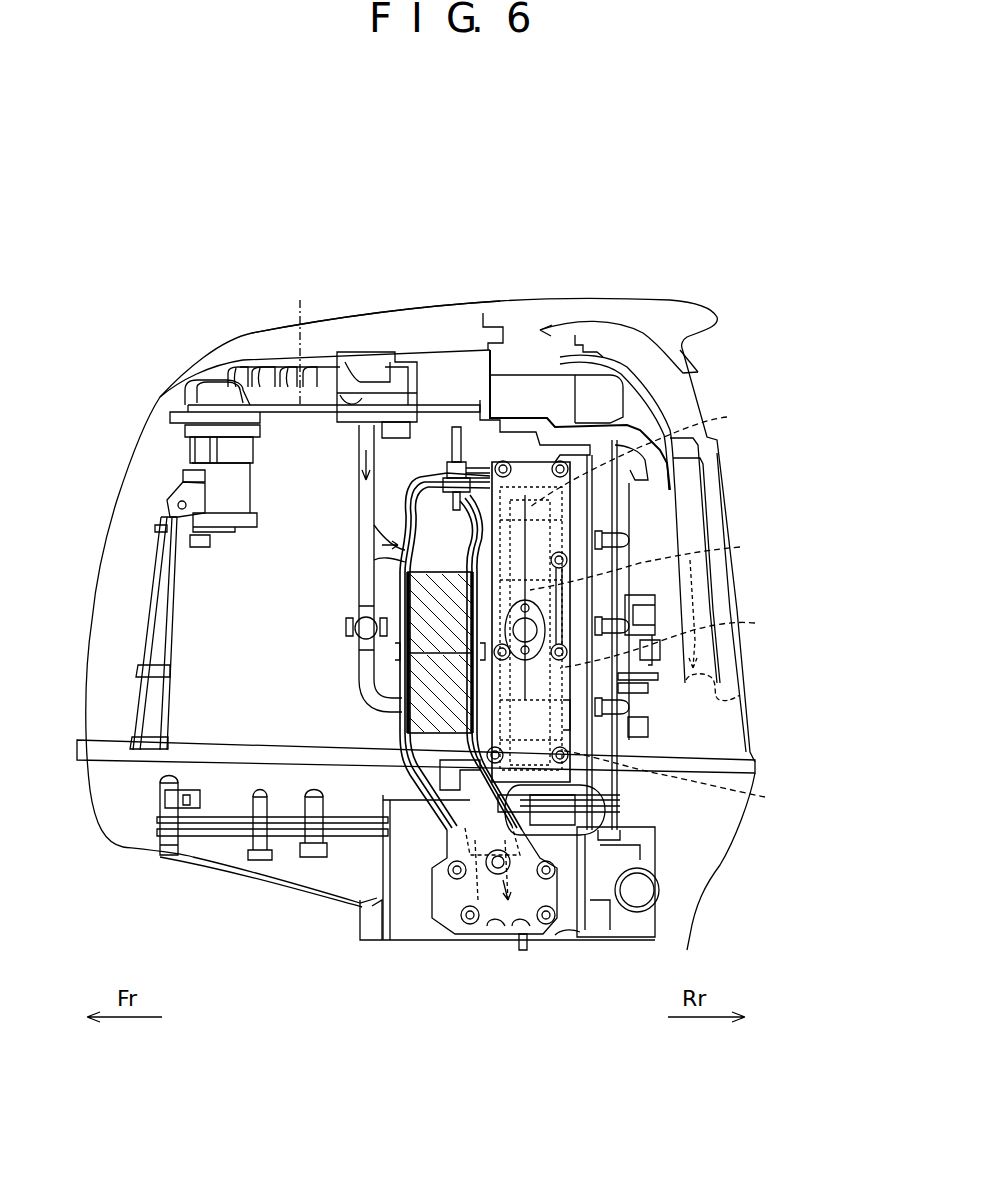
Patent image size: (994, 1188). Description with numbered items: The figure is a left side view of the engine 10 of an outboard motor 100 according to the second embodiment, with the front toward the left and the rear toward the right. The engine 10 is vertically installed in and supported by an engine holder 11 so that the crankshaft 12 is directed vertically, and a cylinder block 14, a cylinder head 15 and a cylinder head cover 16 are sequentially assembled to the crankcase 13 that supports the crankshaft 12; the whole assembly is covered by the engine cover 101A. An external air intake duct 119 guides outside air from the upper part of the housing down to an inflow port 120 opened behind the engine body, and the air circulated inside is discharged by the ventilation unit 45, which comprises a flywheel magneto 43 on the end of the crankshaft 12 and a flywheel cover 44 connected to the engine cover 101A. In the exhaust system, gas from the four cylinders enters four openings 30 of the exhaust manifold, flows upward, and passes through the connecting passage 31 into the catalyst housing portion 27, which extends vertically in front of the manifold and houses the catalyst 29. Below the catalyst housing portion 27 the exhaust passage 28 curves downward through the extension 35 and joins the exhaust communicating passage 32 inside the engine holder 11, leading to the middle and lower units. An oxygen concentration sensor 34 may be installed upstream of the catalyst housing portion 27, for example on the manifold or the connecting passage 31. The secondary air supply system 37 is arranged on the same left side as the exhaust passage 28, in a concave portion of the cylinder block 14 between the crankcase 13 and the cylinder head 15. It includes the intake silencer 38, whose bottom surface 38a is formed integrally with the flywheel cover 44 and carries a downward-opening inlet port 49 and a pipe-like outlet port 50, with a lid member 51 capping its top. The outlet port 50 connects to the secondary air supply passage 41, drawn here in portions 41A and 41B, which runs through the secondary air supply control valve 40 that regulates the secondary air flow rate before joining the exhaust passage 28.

The engine 10 is at (155, 470).
The engine holder 11 is at (286, 877).
The crankshaft 12 is at (300, 300).
The crankcase 13 is at (243, 577).
The cylinder block 14 is at (477, 453).
The cylinder head 15 is at (527, 467).
The cylinder head cover 16 is at (525, 540).
The catalyst housing portion 27 is at (398, 722).
The exhaust passage 28 is at (530, 537).
The catalyst 29 is at (395, 742).
The openings 30 is at (666, 606).
The connecting passage 31 is at (465, 458).
The exhaust communicating passage 32 is at (521, 955).
The oxygen concentration sensor 34 is at (456, 427).
The extension 35 is at (477, 803).
The secondary air supply system 37 is at (286, 588).
The intake silencer 38 is at (392, 368).
The bottom surface 38a is at (324, 442).
The secondary air supply control valve 40 is at (355, 628).
The secondary air supply passage 41 is at (357, 511).
The pipe upstream portion 41A is at (380, 570).
The pipe downstream portion 41B is at (355, 684).
The flywheel magneto 43 is at (270, 368).
The flywheel cover 44 is at (185, 402).
The ventilation unit 45 is at (214, 366).
The inlet port 49 is at (448, 560).
The outlet port 50 is at (355, 440).
The lid member 51 is at (405, 365).
The outboard motor 100 is at (197, 283).
The engine cover 101A is at (637, 299).
The external air intake duct 119 is at (548, 415).
The inflow port 120 is at (740, 696).